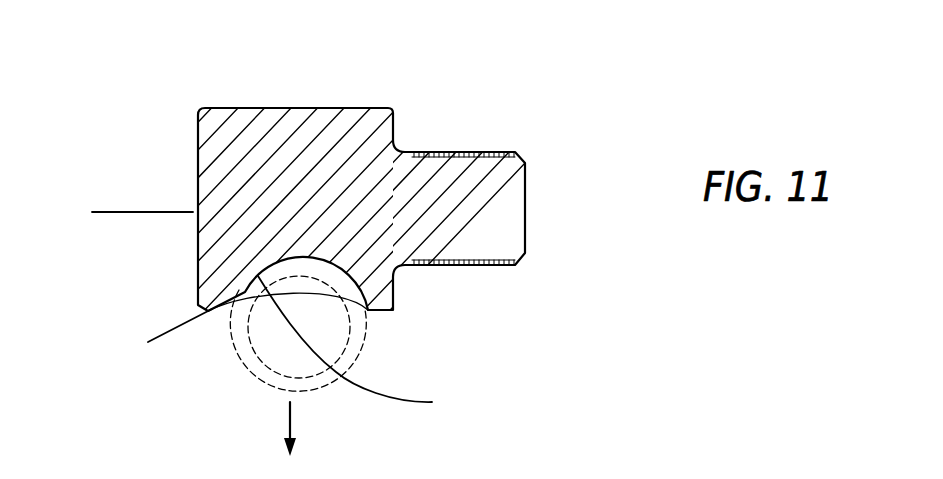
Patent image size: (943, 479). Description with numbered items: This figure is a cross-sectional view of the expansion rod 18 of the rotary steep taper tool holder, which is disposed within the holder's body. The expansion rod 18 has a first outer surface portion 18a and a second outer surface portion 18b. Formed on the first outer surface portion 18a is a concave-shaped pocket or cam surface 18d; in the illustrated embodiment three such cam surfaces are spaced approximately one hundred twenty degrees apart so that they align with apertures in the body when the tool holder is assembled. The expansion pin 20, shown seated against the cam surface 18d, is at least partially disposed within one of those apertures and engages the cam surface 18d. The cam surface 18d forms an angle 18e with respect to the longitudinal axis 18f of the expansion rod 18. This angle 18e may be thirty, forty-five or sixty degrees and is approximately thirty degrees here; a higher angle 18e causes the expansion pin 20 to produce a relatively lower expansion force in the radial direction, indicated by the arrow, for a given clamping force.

The expansion rod 18 is at (369, 239).
The first outer surface portion 18a is at (262, 108).
The second outer surface portion 18b is at (492, 152).
The concave-shaped cam surface 18d is at (365, 346).
The angle 18e is at (122, 220).
The longitudinal axis 18f is at (107, 212).
The expansion pin 20 is at (247, 373).